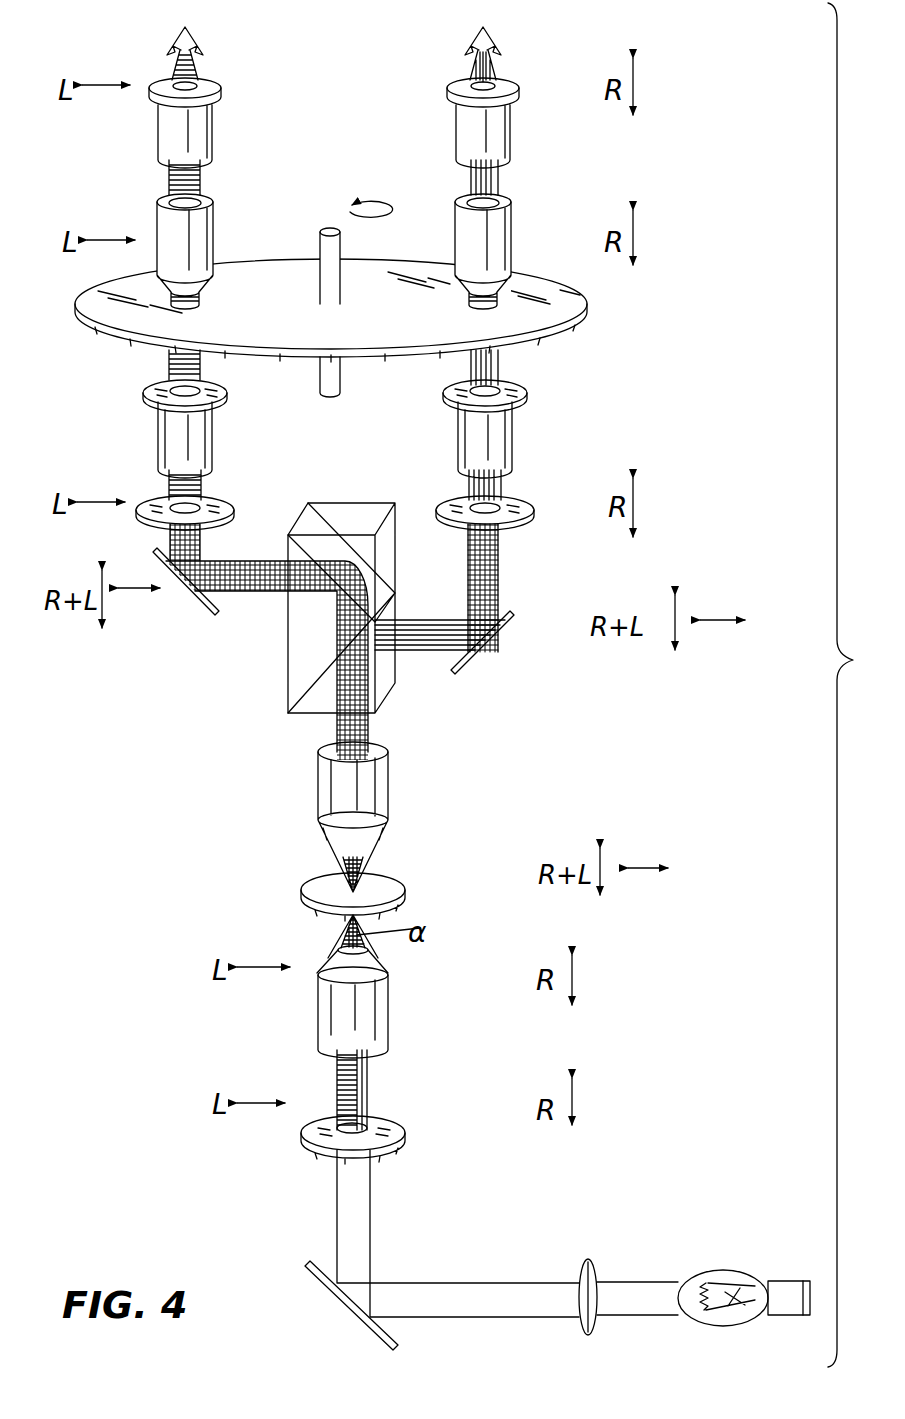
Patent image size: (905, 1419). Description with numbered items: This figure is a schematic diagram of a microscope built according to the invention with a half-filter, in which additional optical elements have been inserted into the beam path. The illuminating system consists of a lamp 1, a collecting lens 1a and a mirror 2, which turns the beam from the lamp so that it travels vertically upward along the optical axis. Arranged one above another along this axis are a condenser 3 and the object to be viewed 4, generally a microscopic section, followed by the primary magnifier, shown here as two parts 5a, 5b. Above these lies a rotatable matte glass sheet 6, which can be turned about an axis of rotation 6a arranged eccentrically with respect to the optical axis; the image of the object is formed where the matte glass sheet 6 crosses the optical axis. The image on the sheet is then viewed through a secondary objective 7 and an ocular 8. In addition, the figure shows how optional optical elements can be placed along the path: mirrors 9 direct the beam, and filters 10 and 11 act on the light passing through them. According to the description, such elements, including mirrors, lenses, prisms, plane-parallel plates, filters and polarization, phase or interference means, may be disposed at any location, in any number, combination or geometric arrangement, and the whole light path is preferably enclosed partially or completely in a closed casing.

The lamp 1 is at (752, 1325).
The collecting lens 1a is at (592, 1330).
The mirror 2 is at (372, 1338).
The condenser 3 is at (385, 1017).
The object to be viewed 4 is at (312, 890).
The first lens 5a is at (318, 781).
The second lens 5b is at (532, 428).
The rotatable matte glass sheet 6 is at (575, 304).
The axis of rotation 6a is at (340, 233).
The secondary objective 7 is at (535, 232).
The ocular 8 is at (532, 135).
The mirrors 9 is at (288, 677).
The filter 10 is at (540, 495).
The filter 11 is at (400, 1137).